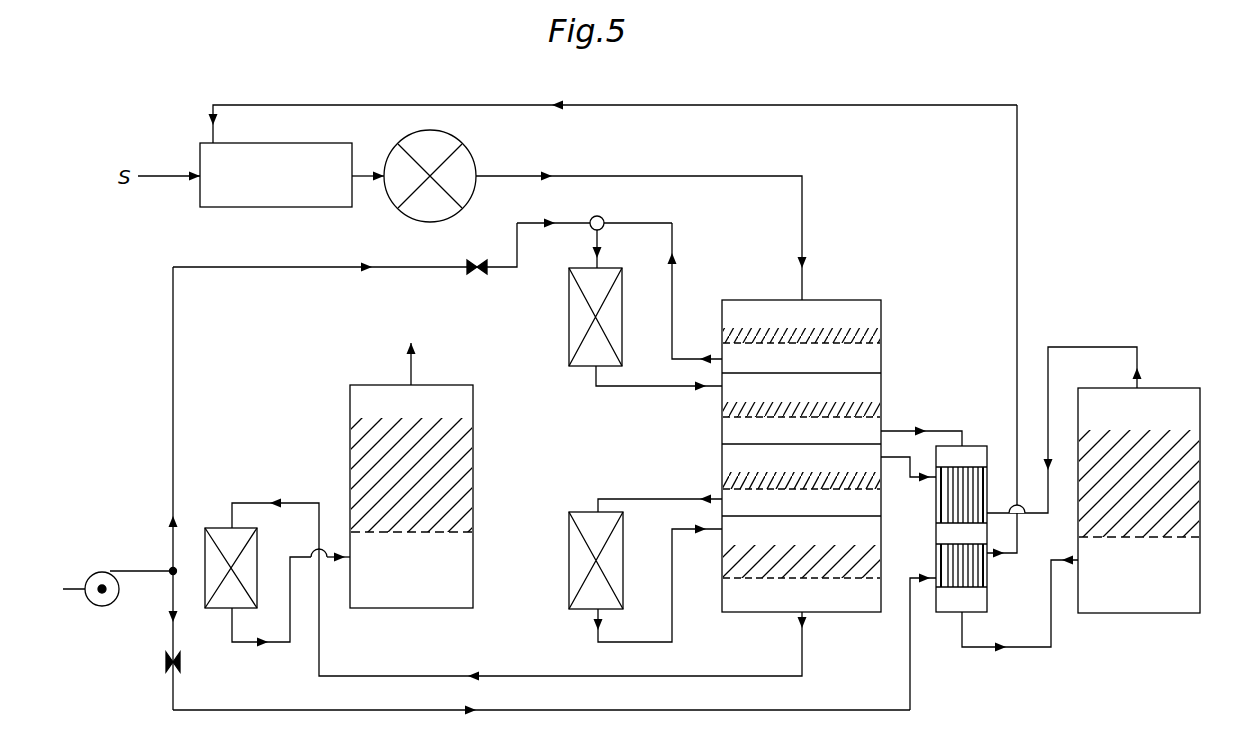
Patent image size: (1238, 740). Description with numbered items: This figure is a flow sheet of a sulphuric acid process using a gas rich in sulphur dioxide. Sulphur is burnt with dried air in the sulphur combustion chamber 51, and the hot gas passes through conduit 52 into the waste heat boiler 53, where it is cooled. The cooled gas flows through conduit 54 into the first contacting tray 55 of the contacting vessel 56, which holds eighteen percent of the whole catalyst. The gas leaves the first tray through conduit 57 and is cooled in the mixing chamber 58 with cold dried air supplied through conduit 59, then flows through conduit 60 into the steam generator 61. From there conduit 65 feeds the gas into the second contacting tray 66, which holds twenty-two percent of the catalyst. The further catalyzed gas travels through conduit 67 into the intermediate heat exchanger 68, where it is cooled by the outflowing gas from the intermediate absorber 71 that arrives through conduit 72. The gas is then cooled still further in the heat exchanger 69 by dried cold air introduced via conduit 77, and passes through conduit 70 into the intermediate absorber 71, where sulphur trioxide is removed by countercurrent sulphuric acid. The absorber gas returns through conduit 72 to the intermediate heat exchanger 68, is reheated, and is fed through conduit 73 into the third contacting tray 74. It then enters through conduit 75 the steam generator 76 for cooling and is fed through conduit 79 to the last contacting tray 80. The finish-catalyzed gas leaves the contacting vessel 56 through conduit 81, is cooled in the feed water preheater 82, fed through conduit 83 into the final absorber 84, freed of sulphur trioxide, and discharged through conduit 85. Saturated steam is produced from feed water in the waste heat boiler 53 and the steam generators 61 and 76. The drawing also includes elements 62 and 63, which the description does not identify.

The sulphur combustion chamber 51 is at (292, 143).
The conduit 52 is at (368, 163).
The waste heat boiler 53 is at (445, 139).
The conduit 54 is at (644, 177).
The first contacting tray 55 is at (880, 335).
The contacting vessel 56 is at (838, 300).
The conduit 57 is at (672, 288).
The mixing chamber 58 is at (594, 211).
The conduit 59 is at (359, 248).
The conduit 60 is at (600, 242).
The steam generator 61 is at (622, 318).
The pump 62 is at (120, 605).
The conduit 63 is at (175, 437).
The conduit 65 is at (659, 387).
The second contacting tray 66 is at (880, 409).
The conduit 67 is at (942, 431).
The intermediate heat exchanger 68 is at (987, 500).
The heat exchanger 69 is at (936, 558).
The conduit 70 is at (1022, 650).
The intermediate absorber 71 is at (1200, 468).
The conduit 72 is at (1100, 347).
The conduit 73 is at (914, 477).
The third contacting tray 74 is at (722, 475).
The conduit 75 is at (648, 502).
The steam generator 76 is at (623, 580).
The conduit 77 is at (358, 712).
The conduit 79 is at (642, 645).
The last contacting tray 80 is at (722, 568).
The conduit 81 is at (572, 678).
The feed water preheater 82 is at (227, 554).
The conduit 83 is at (244, 645).
The final absorber 84 is at (350, 468).
The conduit 85 is at (413, 378).